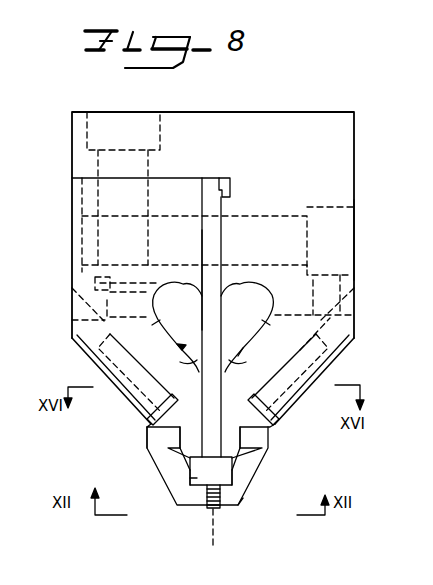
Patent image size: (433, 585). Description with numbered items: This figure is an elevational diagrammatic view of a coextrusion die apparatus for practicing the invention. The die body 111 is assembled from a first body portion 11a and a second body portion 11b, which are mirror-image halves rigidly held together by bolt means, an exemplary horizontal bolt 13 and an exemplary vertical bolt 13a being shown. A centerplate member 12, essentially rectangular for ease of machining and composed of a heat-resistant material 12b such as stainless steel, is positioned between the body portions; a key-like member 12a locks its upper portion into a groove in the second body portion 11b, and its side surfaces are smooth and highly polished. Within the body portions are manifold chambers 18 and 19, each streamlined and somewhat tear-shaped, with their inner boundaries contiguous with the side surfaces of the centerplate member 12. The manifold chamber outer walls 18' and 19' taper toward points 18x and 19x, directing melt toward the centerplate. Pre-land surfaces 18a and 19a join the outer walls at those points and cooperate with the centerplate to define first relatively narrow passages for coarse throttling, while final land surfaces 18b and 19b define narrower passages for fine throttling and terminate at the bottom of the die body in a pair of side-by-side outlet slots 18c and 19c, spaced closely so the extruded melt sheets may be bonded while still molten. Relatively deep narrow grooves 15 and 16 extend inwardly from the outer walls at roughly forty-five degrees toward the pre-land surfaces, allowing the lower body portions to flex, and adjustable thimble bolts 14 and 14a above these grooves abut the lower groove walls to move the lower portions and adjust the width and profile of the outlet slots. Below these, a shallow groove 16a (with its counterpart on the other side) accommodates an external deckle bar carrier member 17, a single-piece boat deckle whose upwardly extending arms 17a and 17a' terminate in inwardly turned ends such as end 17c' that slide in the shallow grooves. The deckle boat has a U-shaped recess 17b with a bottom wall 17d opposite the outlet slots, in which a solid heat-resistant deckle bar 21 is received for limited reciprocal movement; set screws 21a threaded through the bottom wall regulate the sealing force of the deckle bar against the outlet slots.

The die body 111 is at (356, 143).
The first body portion 11a is at (77, 196).
The second body portion 11b is at (348, 174).
The centerplate member 12 is at (214, 179).
The key-like member 12a is at (231, 188).
The heat-resistant material 12b is at (218, 250).
The horizontal bolt 13 is at (322, 206).
The vertical bolt 13a is at (163, 136).
The adjustable thimble bolt 14 is at (323, 362).
The adjustable thimble bolt 14a is at (110, 372).
The deep narrow groove 15 is at (303, 356).
The deep narrow groove 16 is at (160, 391).
The shallow groove 16a is at (148, 428).
The deckle bar carrier member 17 is at (252, 489).
The upwardly extending arm 17a is at (274, 449).
The upwardly extending arm 17a' is at (165, 507).
The U-shaped recess 17b is at (185, 465).
The inwardly turned end 17c' is at (122, 444).
The bottom wall 17d is at (239, 502).
The manifold chamber 18 is at (247, 327).
The manifold chamber outer wall 18' is at (277, 336).
The pre-land surface 18a is at (249, 369).
The final land surface 18b is at (257, 409).
The outlet slot 18c is at (236, 468).
The point 18x is at (238, 345).
The manifold chamber 19 is at (177, 327).
The manifold chamber outer wall 19' is at (139, 330).
The pre-land surface 19a is at (183, 366).
The final land surface 19b is at (168, 409).
The outlet slot 19c is at (197, 478).
The point 19x is at (172, 350).
The deckle bar 21 is at (198, 490).
The set screw 21a is at (214, 540).